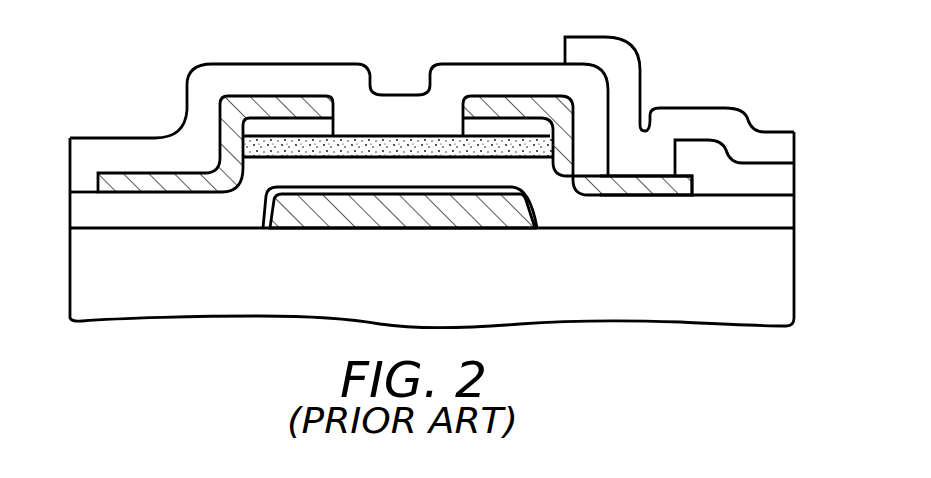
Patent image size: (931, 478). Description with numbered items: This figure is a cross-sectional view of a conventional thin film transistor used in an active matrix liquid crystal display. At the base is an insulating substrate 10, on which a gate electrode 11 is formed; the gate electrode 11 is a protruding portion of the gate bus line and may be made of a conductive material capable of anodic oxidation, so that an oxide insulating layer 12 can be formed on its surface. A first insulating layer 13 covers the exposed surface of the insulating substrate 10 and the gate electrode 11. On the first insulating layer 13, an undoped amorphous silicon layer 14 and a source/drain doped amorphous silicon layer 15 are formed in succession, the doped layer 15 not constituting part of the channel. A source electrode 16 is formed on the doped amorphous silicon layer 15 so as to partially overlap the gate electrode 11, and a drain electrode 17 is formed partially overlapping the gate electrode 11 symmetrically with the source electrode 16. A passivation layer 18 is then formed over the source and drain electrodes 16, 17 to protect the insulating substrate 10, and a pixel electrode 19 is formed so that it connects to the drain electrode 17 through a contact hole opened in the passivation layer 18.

The insulating substrate 10 is at (767, 280).
The gate electrode 11 is at (333, 228).
The oxide insulating layer 12 is at (528, 198).
The first insulating layer 13 is at (758, 208).
The undoped amorphous silicon layer 14 is at (405, 143).
The source/drain doped amorphous silicon layer 15 is at (527, 128).
The source electrode 16 is at (240, 100).
The drain electrode 17 is at (647, 175).
The passivation layer 18 is at (323, 82).
The pixel electrode 19 is at (623, 83).